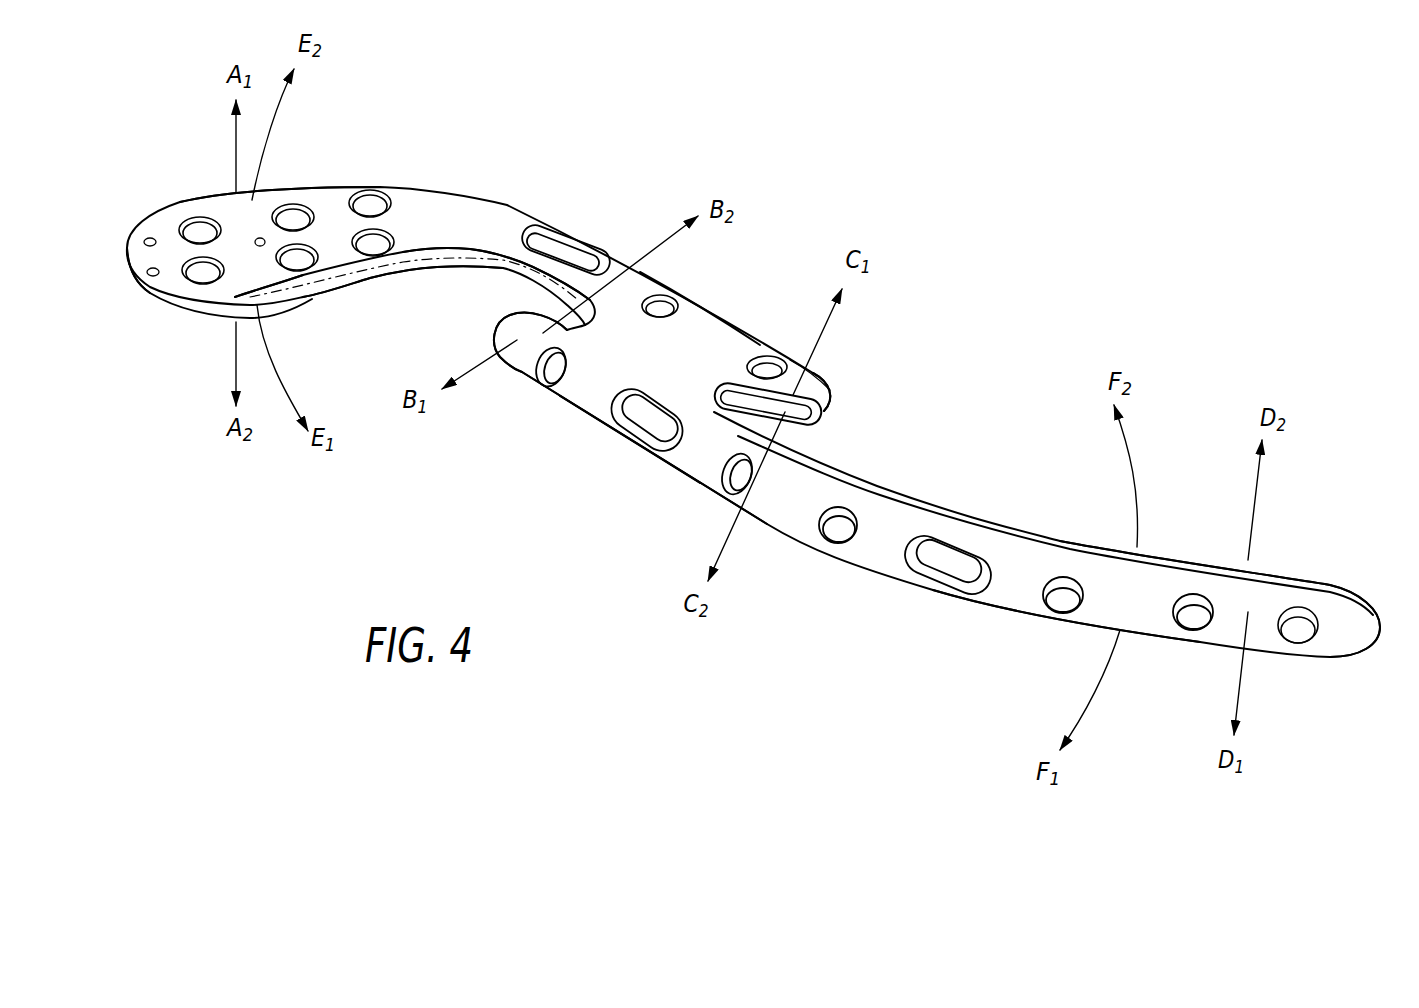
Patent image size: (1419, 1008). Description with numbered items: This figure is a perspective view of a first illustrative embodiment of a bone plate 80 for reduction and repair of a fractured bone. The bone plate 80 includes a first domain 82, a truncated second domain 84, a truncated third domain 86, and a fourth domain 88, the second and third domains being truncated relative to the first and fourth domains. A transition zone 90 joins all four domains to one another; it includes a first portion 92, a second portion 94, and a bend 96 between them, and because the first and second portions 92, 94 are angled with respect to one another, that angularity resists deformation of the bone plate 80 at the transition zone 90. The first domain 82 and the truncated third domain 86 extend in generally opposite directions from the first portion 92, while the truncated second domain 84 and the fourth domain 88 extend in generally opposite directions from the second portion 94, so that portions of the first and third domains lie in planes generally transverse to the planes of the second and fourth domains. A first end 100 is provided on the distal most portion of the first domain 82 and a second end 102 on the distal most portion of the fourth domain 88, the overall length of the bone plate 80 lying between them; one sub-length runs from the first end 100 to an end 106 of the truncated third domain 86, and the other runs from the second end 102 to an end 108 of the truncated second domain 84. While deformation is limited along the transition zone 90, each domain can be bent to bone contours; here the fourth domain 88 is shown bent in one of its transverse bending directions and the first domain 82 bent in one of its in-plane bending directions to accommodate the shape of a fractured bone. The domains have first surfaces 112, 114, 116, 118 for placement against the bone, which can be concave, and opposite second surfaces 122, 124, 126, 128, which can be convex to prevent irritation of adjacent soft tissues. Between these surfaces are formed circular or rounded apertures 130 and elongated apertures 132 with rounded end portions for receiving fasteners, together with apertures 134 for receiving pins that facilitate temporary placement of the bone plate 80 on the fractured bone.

The bone plate 80 is at (940, 482).
The first domain 82 is at (332, 200).
The truncated second domain 84 is at (488, 344).
The truncated third domain 86 is at (833, 383).
The fourth domain 88 is at (1013, 585).
The transition zone 90 is at (703, 303).
The first portion 92 is at (736, 346).
The second portion 94 is at (586, 398).
The bend 96 is at (610, 345).
The first end 100 is at (126, 270).
The second end 102 is at (1380, 617).
The end of the truncated third domain 106 is at (830, 408).
The end of the truncated second domain 108 is at (500, 318).
The first surface 112 is at (327, 304).
The first surface 114 is at (531, 302).
The first surface 116 is at (800, 425).
The first surface 118 is at (1187, 560).
The second surface 122 is at (265, 284).
The second surface 124 is at (520, 365).
The second surface 126 is at (817, 375).
The second surface 128 is at (1156, 607).
The apertures 130 is at (207, 283).
The apertures 132 is at (535, 224).
The apertures 134 is at (155, 267).